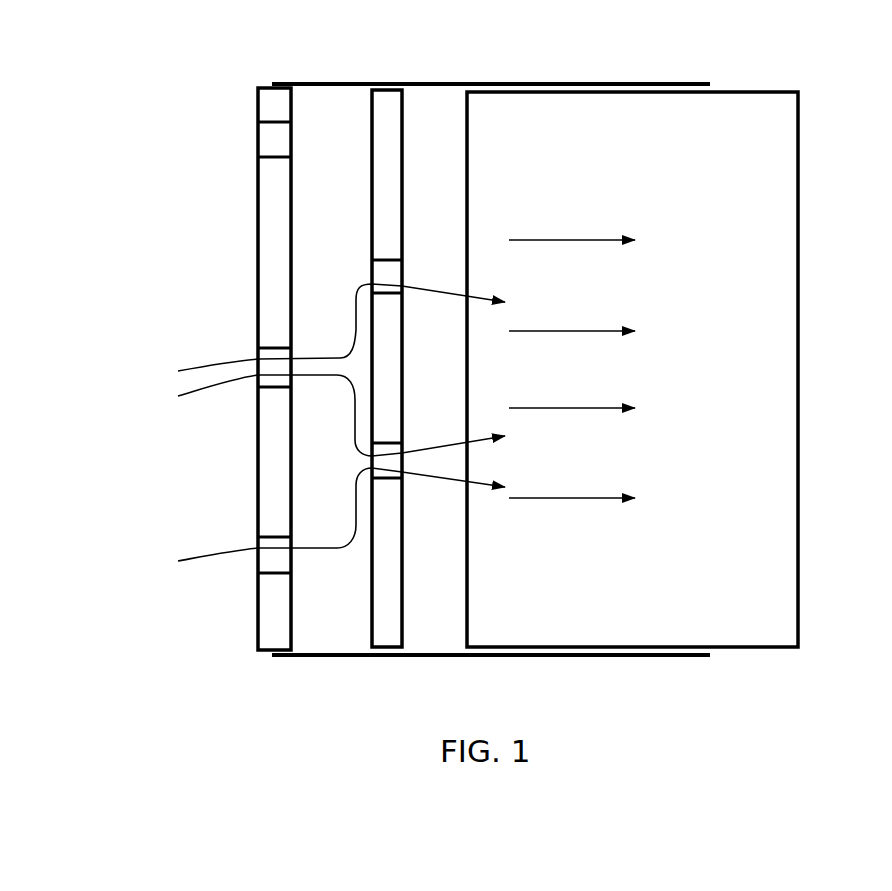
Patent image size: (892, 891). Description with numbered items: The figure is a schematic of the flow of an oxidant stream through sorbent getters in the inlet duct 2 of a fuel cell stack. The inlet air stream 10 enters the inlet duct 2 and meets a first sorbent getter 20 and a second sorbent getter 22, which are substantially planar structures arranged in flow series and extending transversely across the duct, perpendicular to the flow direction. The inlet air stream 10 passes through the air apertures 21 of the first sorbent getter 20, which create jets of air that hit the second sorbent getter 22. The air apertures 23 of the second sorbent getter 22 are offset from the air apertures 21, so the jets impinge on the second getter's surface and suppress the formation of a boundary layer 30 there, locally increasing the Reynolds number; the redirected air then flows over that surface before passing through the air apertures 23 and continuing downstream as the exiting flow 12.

The inlet duct 2 is at (771, 90).
The inlet air stream 10 is at (200, 228).
The output light 12 is at (577, 331).
The first sorbent getter 20 is at (278, 95).
The air apertures 21 is at (270, 136).
The second sorbent getter 22 is at (386, 101).
The air apertures 23 is at (384, 268).
The boundary layer 30 is at (340, 352).